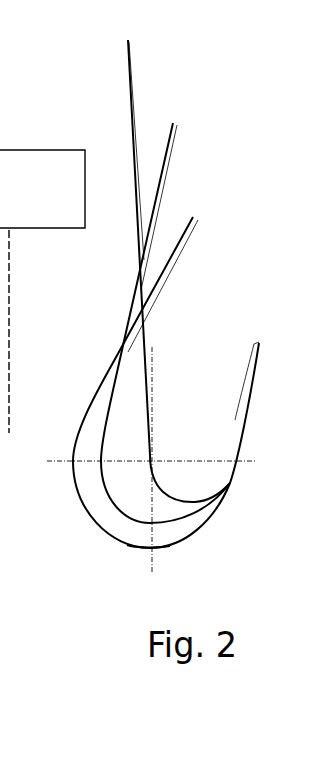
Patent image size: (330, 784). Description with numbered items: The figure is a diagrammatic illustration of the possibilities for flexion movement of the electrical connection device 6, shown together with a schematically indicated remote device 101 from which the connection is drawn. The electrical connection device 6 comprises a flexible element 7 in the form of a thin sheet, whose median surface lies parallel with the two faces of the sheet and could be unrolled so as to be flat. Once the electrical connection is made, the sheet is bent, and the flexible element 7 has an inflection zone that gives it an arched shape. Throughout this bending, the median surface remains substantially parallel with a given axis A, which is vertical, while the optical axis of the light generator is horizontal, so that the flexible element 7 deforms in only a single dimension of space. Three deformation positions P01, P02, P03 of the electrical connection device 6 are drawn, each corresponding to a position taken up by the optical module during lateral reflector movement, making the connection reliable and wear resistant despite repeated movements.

The remote device 101 is at (0, 129).
The electrical connection device 6 is at (82, 547).
The flexible element 7 is at (187, 545).
The first deformation position P01 is at (214, 115).
The second deformation position P02 is at (120, 67).
The third deformation position P03 is at (243, 222).
The axis A is at (171, 453).